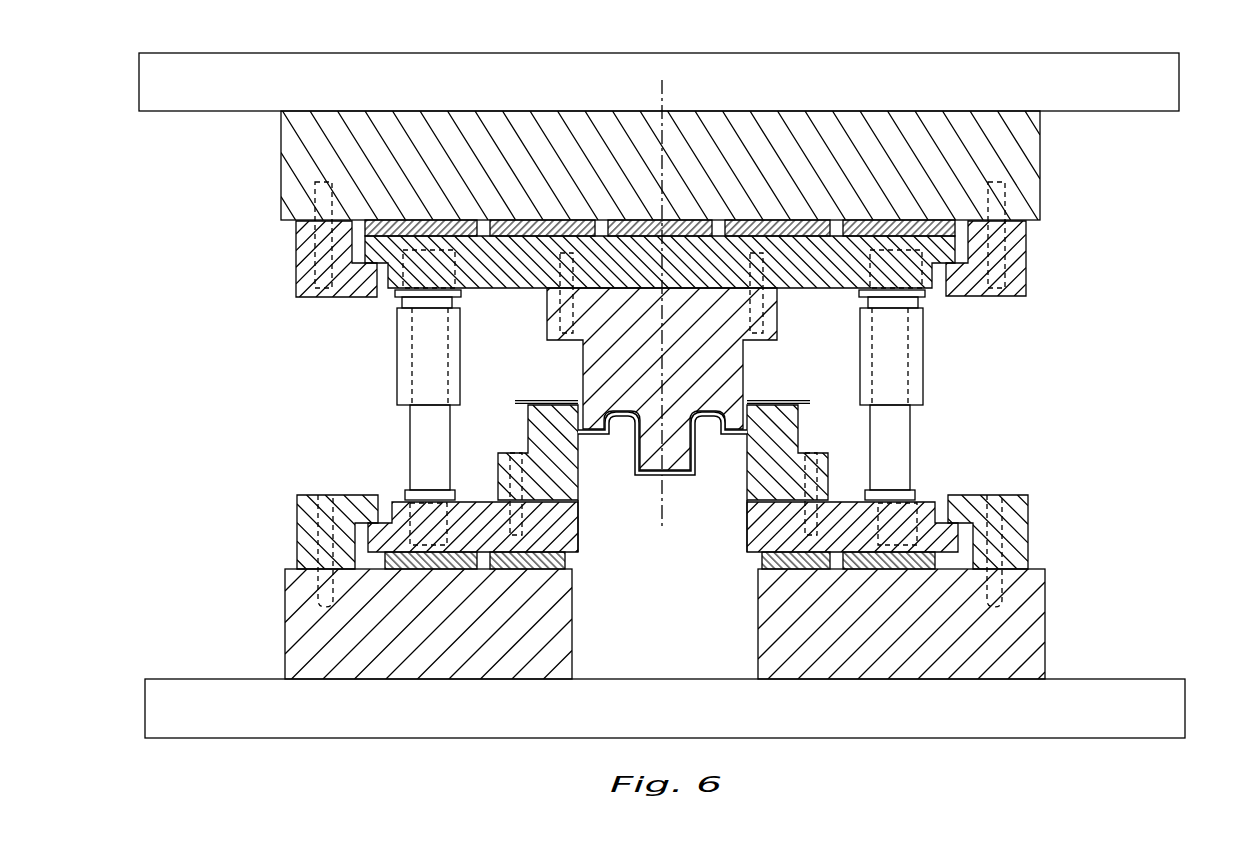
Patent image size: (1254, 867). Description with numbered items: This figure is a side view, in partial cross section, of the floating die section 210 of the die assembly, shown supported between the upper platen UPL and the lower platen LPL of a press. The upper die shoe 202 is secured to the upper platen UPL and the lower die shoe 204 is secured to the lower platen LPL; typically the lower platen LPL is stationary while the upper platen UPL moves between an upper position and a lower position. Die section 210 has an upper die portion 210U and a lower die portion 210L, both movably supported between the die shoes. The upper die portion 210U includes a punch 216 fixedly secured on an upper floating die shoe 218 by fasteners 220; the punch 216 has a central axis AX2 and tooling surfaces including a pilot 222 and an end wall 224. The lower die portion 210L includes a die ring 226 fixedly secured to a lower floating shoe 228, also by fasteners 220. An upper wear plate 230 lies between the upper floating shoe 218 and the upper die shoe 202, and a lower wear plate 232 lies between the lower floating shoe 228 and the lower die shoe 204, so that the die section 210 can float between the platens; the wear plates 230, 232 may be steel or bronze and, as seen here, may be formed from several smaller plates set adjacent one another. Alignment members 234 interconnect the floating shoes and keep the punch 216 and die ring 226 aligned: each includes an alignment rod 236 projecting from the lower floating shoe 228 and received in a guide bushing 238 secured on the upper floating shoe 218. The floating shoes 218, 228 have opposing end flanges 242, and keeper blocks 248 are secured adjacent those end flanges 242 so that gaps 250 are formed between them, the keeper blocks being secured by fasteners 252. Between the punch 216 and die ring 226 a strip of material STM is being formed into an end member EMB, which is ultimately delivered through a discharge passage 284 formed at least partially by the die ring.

The upper die shoe 202 is at (807, 111).
The lower die shoe 204 is at (467, 668).
The die section 210 is at (1157, 260).
The upper die portion 210U is at (795, 345).
The lower die portion 210L is at (850, 458).
The punch 216 is at (604, 312).
The upper floating die shoe 218 is at (820, 256).
The fasteners 220 is at (754, 252).
The pilot 222 is at (680, 447).
The end wall 224 is at (730, 428).
The die ring 226 is at (528, 433).
The lower floating shoe 228 is at (530, 557).
The upper wear plate 230 is at (500, 220).
The lower wear plate 232 is at (863, 563).
The alignment members 234 is at (663, 395).
The alignment rod 236 is at (410, 450).
The guide bushings 238 is at (397, 369).
The end flanges 242 is at (370, 243).
The keeper blocks 248 is at (296, 256).
The gaps 250 is at (968, 250).
The fasteners 252 is at (1026, 268).
The discharge passage 284 is at (725, 475).
The central axis AX2 is at (662, 95).
The upper platen UPL is at (220, 93).
The lower platen LPL is at (214, 693).
The strip of material STM is at (545, 400).
The end member EMB is at (618, 472).